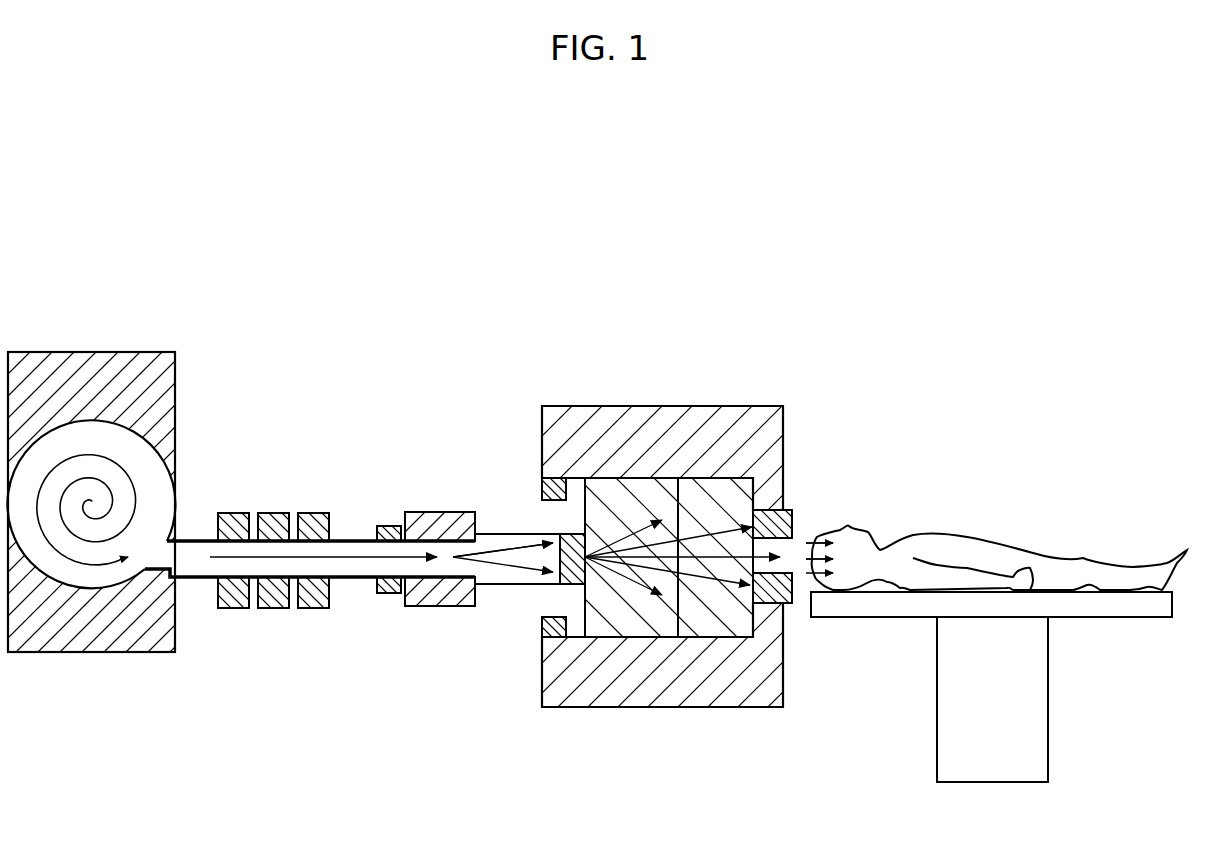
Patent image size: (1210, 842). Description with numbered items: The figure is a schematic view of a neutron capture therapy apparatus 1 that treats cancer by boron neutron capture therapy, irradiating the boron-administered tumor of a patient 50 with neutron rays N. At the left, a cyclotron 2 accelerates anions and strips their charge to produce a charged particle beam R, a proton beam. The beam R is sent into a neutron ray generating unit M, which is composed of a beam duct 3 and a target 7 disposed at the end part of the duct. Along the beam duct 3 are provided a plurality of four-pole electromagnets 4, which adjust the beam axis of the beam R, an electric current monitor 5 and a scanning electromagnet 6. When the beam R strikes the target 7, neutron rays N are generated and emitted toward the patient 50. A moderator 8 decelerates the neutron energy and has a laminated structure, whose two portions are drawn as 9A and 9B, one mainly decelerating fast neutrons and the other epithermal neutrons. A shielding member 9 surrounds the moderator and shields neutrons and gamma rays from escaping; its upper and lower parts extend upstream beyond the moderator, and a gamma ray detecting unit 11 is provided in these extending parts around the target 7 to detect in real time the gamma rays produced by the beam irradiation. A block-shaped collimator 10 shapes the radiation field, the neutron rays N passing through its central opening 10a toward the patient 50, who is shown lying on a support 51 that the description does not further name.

The neutron capture therapy apparatus 1 is at (291, 237).
The cyclotron 2 is at (88, 362).
The beam duct 3 is at (353, 541).
The neutron ray generating unit M is at (447, 511).
The charged particle beam R is at (367, 560).
The four-pole electromagnets 4 is at (313, 513).
The electric current monitor 5 is at (390, 527).
The scanning electromagnet 6 is at (443, 520).
The target 7 is at (578, 537).
The moderator 8 is at (588, 700).
The shielding member 9 is at (669, 473).
The first moderator portion 9A is at (626, 485).
The second moderator portion 9B is at (697, 487).
The collimator 10 is at (788, 605).
The opening 10a is at (795, 578).
The gamma ray detecting unit 11 is at (545, 490).
The neutron rays N is at (723, 567).
The patient 50 is at (995, 557).
The treatment table 51 is at (1103, 605).